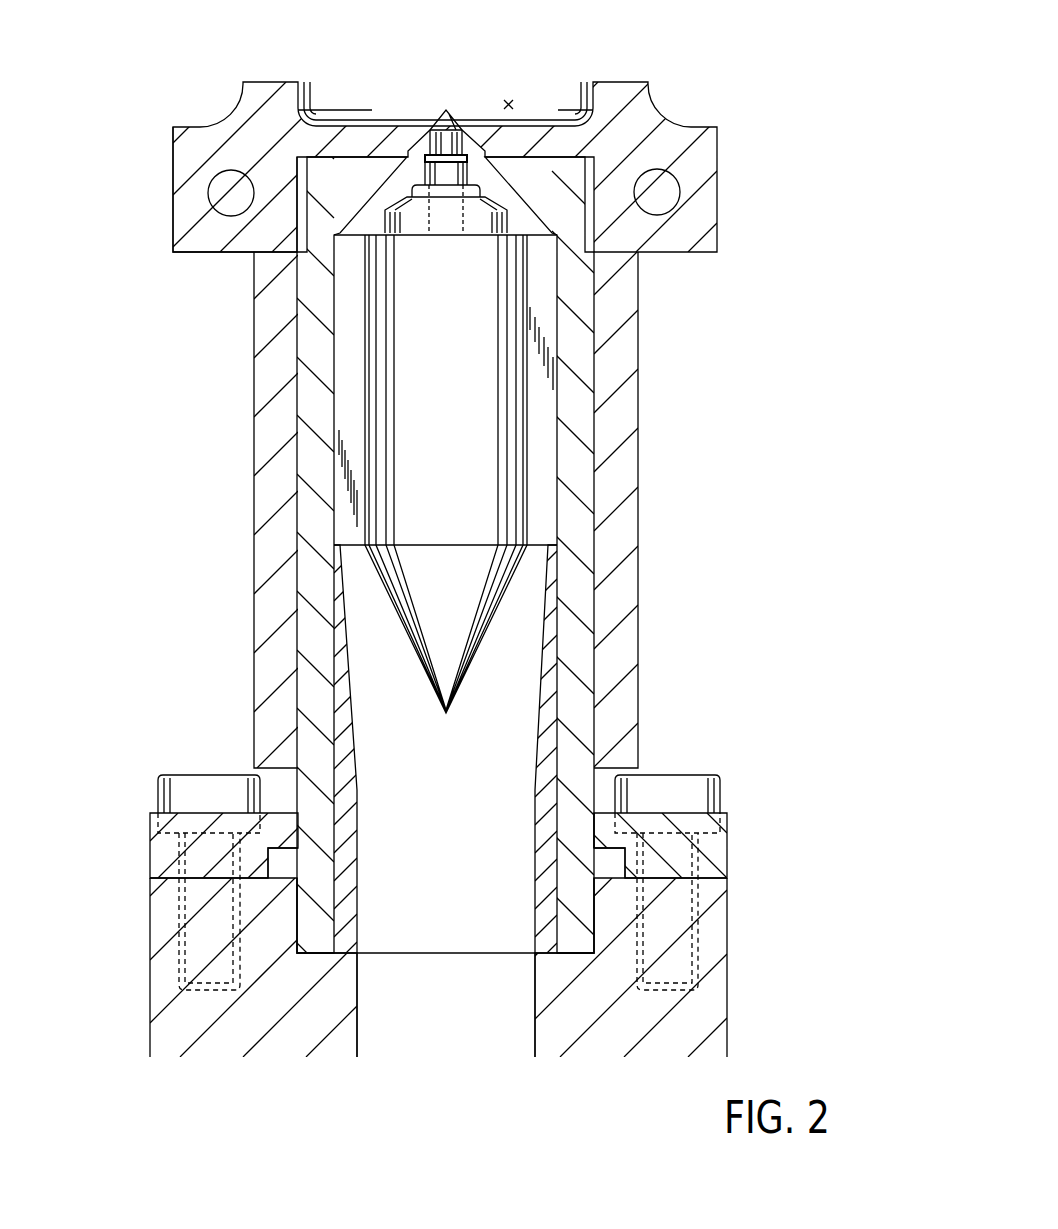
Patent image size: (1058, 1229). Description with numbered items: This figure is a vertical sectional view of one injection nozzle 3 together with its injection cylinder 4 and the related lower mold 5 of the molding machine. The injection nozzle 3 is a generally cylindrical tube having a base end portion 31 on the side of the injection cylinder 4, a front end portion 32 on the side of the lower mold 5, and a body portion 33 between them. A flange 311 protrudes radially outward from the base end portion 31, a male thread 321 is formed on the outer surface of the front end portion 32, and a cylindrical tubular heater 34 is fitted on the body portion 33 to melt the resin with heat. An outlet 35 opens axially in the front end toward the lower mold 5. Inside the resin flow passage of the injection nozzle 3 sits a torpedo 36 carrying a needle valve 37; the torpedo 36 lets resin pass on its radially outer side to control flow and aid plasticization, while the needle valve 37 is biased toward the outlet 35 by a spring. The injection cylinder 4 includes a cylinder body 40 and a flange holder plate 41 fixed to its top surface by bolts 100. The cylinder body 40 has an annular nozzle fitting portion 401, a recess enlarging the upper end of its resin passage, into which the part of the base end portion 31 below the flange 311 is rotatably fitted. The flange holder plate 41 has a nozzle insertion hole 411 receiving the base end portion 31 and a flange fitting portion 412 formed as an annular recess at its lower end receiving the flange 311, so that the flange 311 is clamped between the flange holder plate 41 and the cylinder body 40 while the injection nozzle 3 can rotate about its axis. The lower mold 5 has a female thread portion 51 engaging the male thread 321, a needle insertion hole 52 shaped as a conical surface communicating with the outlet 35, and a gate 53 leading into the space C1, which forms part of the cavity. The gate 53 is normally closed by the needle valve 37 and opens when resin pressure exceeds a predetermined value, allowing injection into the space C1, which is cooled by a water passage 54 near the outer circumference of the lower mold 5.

The injection nozzle 3 is at (205, 465).
The injection cylinder 4 is at (768, 880).
The lower mold 5 is at (729, 67).
The base end portion 31 is at (280, 923).
The flange 311 is at (275, 868).
The front end portion 32 is at (280, 200).
The male thread 321 is at (297, 214).
The body portion 33 is at (283, 540).
The cylindrical tubular heater 34 is at (612, 472).
The outlet 35 is at (406, 218).
The torpedo 36 is at (480, 405).
The needle valve 37 is at (447, 145).
The cylinder body 40 is at (712, 990).
The flange holder plate 41 is at (718, 857).
The nozzle fitting portion 401 is at (590, 912).
The nozzle insertion hole 411 is at (582, 826).
The flange fitting portion 412 is at (622, 866).
The female thread portion 51 is at (592, 222).
The needle insertion hole 52 is at (481, 150).
The gate 53 is at (447, 108).
The water passage 54 is at (665, 185).
The bolts 100 is at (215, 795).
The space C1 is at (510, 104).